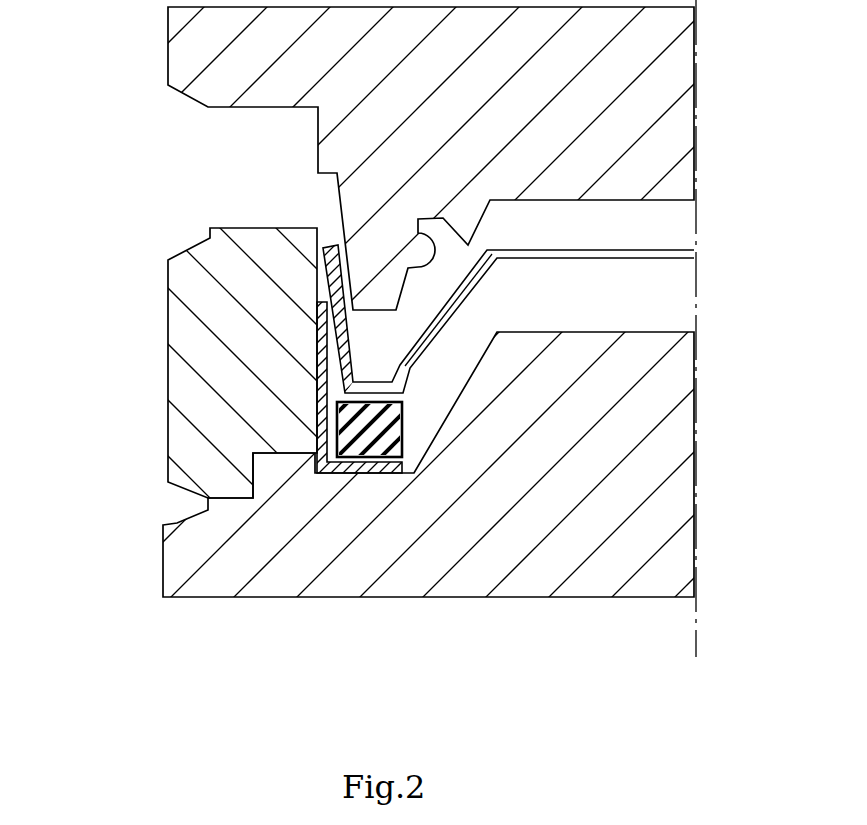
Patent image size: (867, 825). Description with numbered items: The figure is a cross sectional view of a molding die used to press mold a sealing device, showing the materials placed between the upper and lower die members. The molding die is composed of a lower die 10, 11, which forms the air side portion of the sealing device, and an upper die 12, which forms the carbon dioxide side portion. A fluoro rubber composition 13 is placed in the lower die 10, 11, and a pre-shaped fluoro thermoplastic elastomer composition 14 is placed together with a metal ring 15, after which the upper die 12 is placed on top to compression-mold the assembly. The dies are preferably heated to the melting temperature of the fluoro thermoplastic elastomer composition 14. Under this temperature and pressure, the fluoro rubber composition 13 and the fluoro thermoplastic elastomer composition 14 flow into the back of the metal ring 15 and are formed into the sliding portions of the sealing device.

The lower die 10 is at (250, 555).
The lower die 11 is at (198, 407).
The upper die 12 is at (260, 62).
The fluoro rubber composition 13 is at (378, 430).
The fluoro thermoplastic elastomer composition 14 is at (463, 297).
The metal ring 15 is at (323, 375).